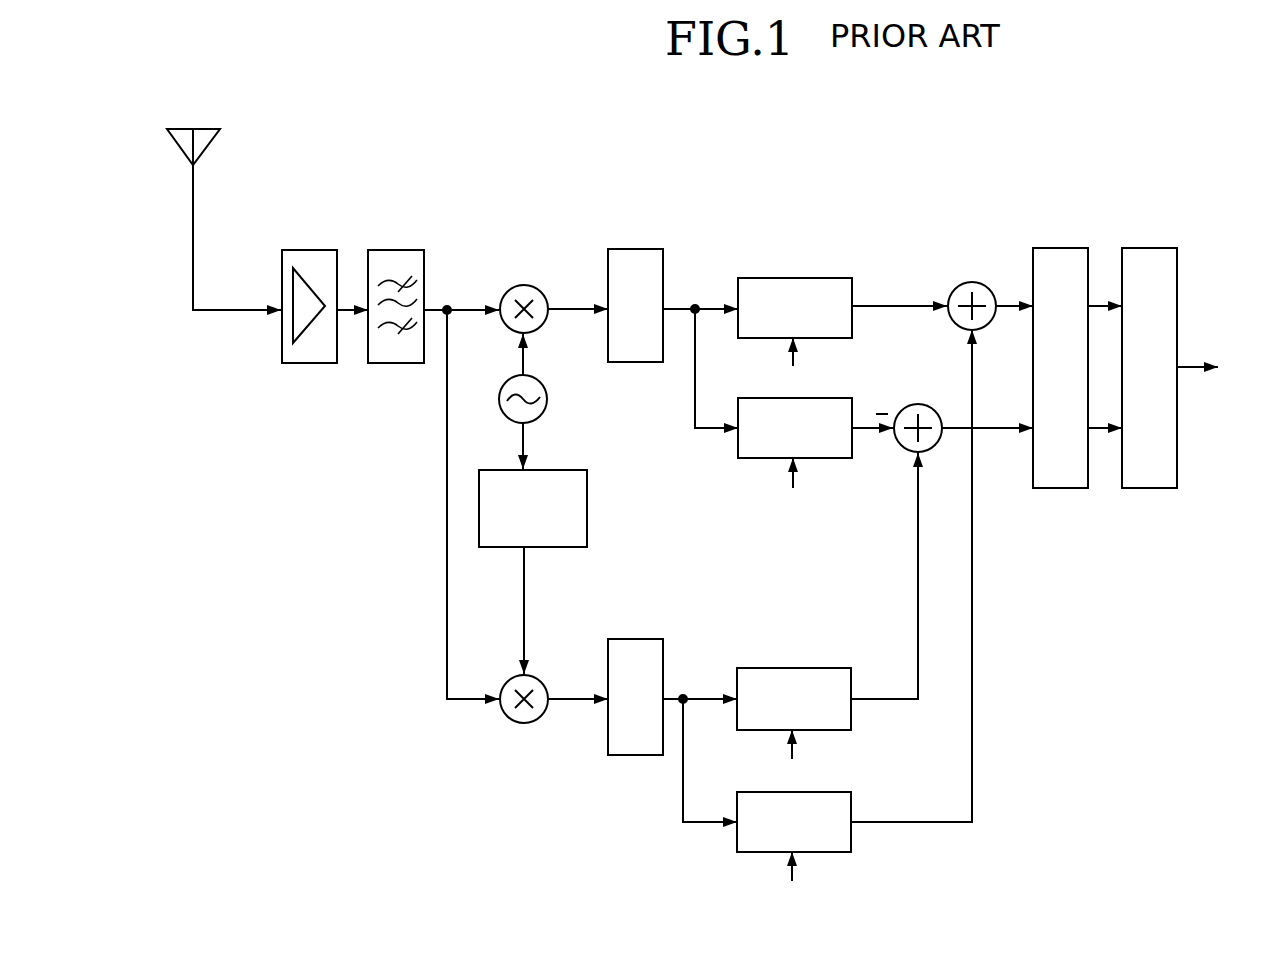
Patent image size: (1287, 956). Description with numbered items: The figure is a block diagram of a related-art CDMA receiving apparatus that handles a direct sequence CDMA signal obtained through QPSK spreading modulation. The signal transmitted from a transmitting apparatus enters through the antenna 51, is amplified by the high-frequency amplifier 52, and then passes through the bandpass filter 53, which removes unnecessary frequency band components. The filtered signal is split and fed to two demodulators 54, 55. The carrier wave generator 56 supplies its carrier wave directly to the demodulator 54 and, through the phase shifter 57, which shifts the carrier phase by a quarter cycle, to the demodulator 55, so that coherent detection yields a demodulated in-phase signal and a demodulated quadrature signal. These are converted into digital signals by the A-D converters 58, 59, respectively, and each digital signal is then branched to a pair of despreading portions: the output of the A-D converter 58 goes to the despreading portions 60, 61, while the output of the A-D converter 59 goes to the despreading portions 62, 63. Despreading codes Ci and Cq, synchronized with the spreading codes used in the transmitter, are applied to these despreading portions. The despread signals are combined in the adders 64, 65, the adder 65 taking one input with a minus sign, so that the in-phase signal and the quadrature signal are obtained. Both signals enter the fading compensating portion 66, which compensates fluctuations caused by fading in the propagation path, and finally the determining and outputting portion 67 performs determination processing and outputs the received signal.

The antenna 51 is at (209, 219).
The high-frequency amplifier 52 is at (309, 293).
The bandpass filter 53 is at (396, 293).
The demodulator 54 is at (524, 295).
The demodulator 55 is at (524, 715).
The carrier wave generator 56 is at (540, 401).
The phase shifter 57 is at (552, 572).
The A-D converter 58 is at (635, 292).
The A-D converter 59 is at (635, 715).
The despreading portion 60 is at (795, 334).
The despreading portion 61 is at (795, 457).
The despreading portion 62 is at (794, 726).
The despreading portion 63 is at (794, 851).
The adder 64 is at (959, 297).
The adder 65 is at (918, 416).
The fading compensating portion 66 is at (1060, 355).
The determining and outputting portion 67 is at (1170, 355).